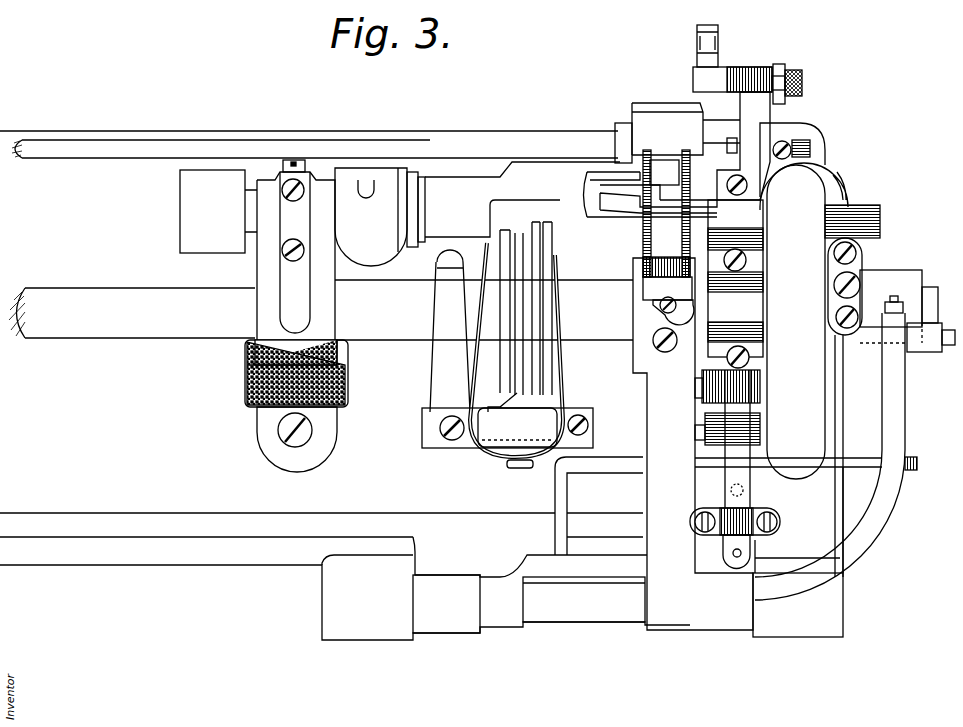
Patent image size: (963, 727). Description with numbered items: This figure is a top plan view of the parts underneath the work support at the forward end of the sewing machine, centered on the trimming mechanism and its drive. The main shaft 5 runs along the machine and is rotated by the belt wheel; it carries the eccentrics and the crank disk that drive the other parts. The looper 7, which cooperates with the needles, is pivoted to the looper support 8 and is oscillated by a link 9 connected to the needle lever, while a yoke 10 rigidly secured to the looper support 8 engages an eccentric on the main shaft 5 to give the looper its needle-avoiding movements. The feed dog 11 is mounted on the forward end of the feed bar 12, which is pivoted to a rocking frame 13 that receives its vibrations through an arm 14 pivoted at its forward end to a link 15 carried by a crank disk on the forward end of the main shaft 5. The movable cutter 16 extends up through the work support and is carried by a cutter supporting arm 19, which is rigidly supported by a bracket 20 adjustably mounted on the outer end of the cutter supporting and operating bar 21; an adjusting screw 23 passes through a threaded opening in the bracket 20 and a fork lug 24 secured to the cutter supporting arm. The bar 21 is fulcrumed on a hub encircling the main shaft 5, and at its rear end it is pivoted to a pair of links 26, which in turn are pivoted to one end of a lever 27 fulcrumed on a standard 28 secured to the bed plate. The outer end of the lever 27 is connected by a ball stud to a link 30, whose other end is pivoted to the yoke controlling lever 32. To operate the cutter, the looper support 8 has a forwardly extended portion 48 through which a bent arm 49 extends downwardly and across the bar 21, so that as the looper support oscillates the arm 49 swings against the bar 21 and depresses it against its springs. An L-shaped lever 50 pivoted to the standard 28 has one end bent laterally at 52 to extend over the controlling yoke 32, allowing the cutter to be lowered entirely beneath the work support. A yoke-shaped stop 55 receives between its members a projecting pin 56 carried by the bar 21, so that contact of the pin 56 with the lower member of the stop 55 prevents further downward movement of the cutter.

The main shaft 5 is at (168, 330).
The looper 7 is at (627, 213).
The looper support 8 is at (570, 195).
The link 9 is at (428, 143).
The yoke 10 is at (262, 270).
The feed dog 11 is at (684, 232).
The feed bar 12 is at (693, 444).
The rocking frame 13 is at (652, 603).
The arm 14 is at (898, 422).
The link 15 is at (920, 348).
The movable cutter 16 is at (670, 178).
The cutter supporting arm 19 is at (757, 118).
The bracket 20 is at (695, 78).
The cutter supporting and operating bar 21 is at (735, 284).
The adjusting screw 23 is at (805, 79).
The fork lug 24 is at (778, 70).
The links 26 is at (745, 380).
The lever 27 is at (733, 420).
The standard 28 is at (703, 437).
The link 30 is at (745, 515).
The yoke controlling lever 32 is at (376, 520).
The forwardly extended portion 48 is at (870, 228).
The bent arm 49 is at (845, 178).
The L-shaped lever 50 is at (606, 468).
The laterally bent end 52 is at (556, 507).
The stop 55 is at (812, 151).
The projecting pin 56 is at (818, 140).